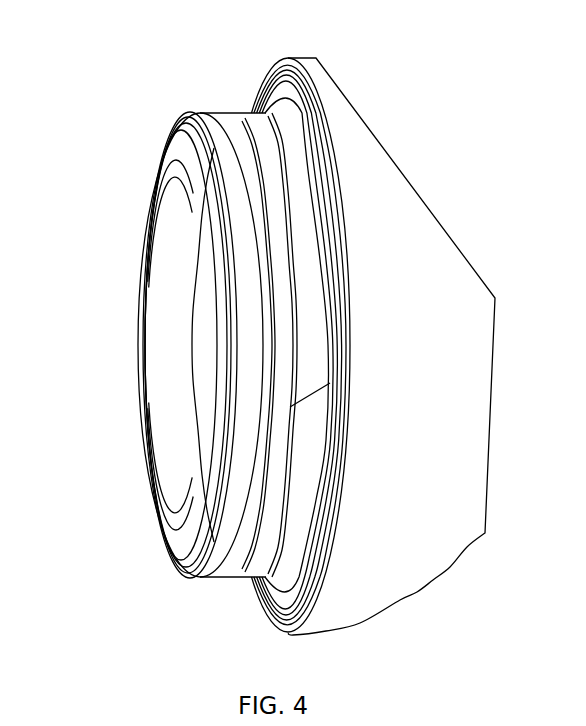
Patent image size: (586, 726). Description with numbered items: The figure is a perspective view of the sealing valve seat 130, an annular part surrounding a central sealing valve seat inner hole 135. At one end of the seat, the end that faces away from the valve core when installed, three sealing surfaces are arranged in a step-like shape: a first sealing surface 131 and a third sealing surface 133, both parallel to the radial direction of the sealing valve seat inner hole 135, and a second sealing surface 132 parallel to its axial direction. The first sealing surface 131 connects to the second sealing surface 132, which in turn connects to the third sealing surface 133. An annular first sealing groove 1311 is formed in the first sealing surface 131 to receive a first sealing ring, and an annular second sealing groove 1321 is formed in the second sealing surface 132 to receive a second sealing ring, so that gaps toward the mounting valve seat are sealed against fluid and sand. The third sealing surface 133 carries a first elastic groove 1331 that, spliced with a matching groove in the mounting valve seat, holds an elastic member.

The sealing valve seat 130 is at (452, 137).
The first sealing surface 131 is at (180, 127).
The second sealing surface 132 is at (230, 112).
The third sealing surface 133 is at (318, 97).
The sealing valve seat inner hole 135 is at (212, 355).
The first sealing groove 1311 is at (192, 549).
The second sealing groove 1321 is at (330, 383).
The first elastic groove 1331 is at (295, 598).